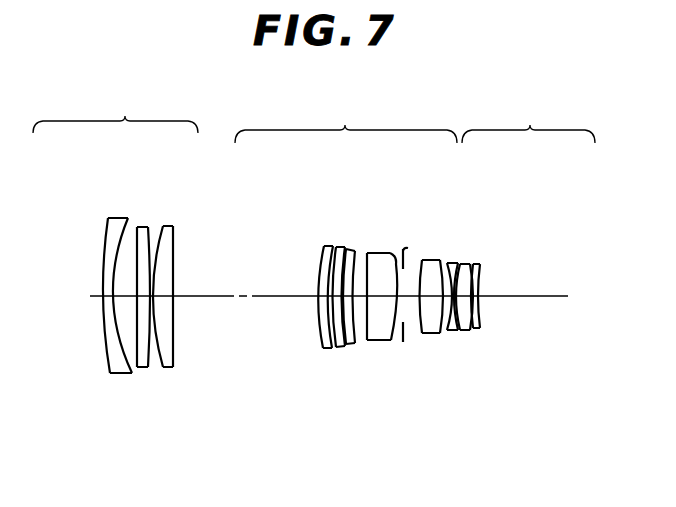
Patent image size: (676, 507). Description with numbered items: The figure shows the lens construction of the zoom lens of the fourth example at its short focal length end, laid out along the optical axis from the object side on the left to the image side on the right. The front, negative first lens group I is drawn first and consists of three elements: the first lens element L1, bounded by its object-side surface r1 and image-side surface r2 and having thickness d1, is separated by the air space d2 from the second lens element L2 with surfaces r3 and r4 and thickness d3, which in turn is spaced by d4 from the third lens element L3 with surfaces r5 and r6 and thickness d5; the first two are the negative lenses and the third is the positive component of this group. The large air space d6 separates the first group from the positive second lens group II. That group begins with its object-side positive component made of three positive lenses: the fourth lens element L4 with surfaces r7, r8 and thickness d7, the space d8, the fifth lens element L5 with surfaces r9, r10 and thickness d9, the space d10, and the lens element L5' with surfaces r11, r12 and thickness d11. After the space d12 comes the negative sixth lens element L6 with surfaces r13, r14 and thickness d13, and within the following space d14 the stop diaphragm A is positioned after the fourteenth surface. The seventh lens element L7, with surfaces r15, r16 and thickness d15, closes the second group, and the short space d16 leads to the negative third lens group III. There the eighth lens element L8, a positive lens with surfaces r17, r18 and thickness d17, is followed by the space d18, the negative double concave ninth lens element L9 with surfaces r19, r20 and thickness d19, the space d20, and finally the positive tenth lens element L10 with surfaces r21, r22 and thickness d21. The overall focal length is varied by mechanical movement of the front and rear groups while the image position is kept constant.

The first lens group I is at (129, 108).
The second lens group II is at (353, 118).
The third lens group III is at (541, 118).
The stop diaphragm A is at (404, 262).
The first lens element L1 is at (79, 278).
The second lens element L2 is at (126, 302).
The third lens element L3 is at (183, 306).
The fourth lens element L4 is at (289, 290).
The fifth lens element L5 is at (318, 307).
The fifth-prime lens element L5' is at (358, 322).
The sixth lens element L6 is at (401, 322).
The seventh lens element L7 is at (443, 322).
The eighth lens element L8 is at (484, 322).
The ninth lens element L9 is at (513, 305).
The tenth lens element L10 is at (553, 305).
The radius of curvature of the first surface r1 is at (104, 248).
The radius of curvature of the second surface r2 is at (128, 221).
The radius of curvature of the third surface r3 is at (125, 250).
The radius of curvature of the fourth surface r4 is at (149, 228).
The radius of curvature of the fifth surface r5 is at (154, 236).
The radius of curvature of the sixth surface r6 is at (176, 238).
The radius of curvature of the seventh surface r7 is at (318, 262).
The radius of curvature of the eighth surface r8 is at (322, 247).
The radius of curvature of the ninth surface r9 is at (336, 245).
The radius of curvature of the tenth surface r10 is at (347, 247).
The radius of curvature of the eleventh surface r11 is at (352, 249).
The radius of curvature of the twelfth surface r12 is at (365, 251).
The radius of curvature of the thirteenth surface r13 is at (368, 252).
The radius of curvature of the fourteenth surface r14 is at (394, 252).
The radius of curvature of the fifteenth surface r15 is at (423, 257).
The radius of curvature of the sixteenth surface r16 is at (443, 259).
The radius of curvature of the seventeenth surface r17 is at (447, 264).
The radius of curvature of the eighteenth surface r18 is at (454, 264).
The radius of curvature of the nineteenth surface r19 is at (461, 266).
The radius of curvature of the twentieth surface r20 is at (468, 266).
The radius of curvature of the twenty-first surface r21 is at (478, 268).
The radius of curvature of the twenty-second surface r22 is at (484, 268).
The lens thickness with respect to the first surface d1 is at (106, 300).
The space with respect to the second surface d2 is at (116, 303).
The lens thickness with respect to the third surface d3 is at (136, 305).
The space with respect to the fourth surface d4 is at (149, 302).
The lens thickness with respect to the fifth surface d5 is at (155, 303).
The space with respect to the sixth surface d6 is at (220, 299).
The lens thickness with respect to the seventh surface d7 is at (324, 300).
The space with respect to the eighth surface d8 is at (341, 305).
The lens thickness with respect to the ninth surface d9 is at (342, 347).
The space with respect to the tenth surface d10 is at (357, 345).
The lens thickness with respect to the eleventh surface d11 is at (375, 341).
The space with respect to the twelfth surface d12 is at (402, 342).
The lens thickness with respect to the thirteenth surface d13 is at (421, 334).
The space with respect to the fourteenth surface d14 is at (428, 335).
The lens thickness with respect to the fifteenth surface d15 is at (440, 335).
The space with respect to the sixteenth surface d16 is at (445, 332).
The lens thickness with respect to the seventeenth surface d17 is at (460, 331).
The space with respect to the eighteenth surface d18 is at (462, 330).
The lens thickness with respect to the nineteenth surface d19 is at (472, 329).
The space with respect to the twentieth surface d20 is at (475, 300).
The lens thickness with respect to the twenty-first surface d21 is at (483, 300).